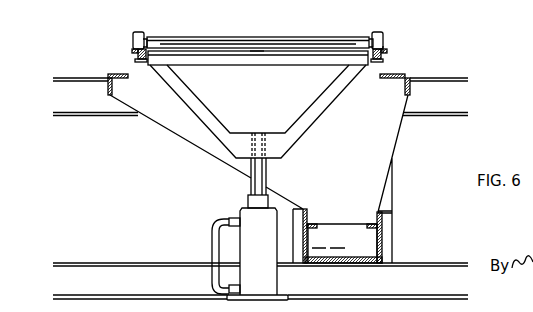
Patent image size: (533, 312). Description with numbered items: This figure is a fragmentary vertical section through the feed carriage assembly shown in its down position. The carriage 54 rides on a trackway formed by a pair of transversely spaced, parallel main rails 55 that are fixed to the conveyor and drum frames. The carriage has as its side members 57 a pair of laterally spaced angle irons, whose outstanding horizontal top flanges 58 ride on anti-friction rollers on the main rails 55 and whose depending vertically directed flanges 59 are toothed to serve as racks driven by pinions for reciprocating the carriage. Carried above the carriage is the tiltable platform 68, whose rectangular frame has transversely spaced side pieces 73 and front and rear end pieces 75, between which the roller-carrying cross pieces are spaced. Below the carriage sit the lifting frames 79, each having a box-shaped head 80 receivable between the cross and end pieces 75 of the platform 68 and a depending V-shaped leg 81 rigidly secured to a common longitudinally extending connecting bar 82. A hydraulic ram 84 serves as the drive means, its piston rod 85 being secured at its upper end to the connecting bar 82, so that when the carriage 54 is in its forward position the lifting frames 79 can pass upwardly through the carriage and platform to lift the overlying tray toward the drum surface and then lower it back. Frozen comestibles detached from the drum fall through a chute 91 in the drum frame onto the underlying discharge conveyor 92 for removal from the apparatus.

The carriage 54 is at (394, 54).
The main rails 55 is at (108, 76).
The side members 57 is at (139, 59).
The top flanges 58 is at (132, 51).
The vertically directed flanges 59 is at (142, 62).
The tiltable platform 68 is at (311, 32).
The side pieces 73 is at (146, 29).
The end pieces 75 is at (198, 46).
The lifting frames 79 is at (260, 45).
The head 80 is at (263, 66).
The V-shaped leg 81 is at (193, 110).
The connecting bar 82 is at (257, 133).
The hydraulic ram 84 is at (265, 262).
The piston rod 85 is at (251, 185).
The chute 91 is at (400, 131).
The discharge conveyor 92 is at (337, 224).